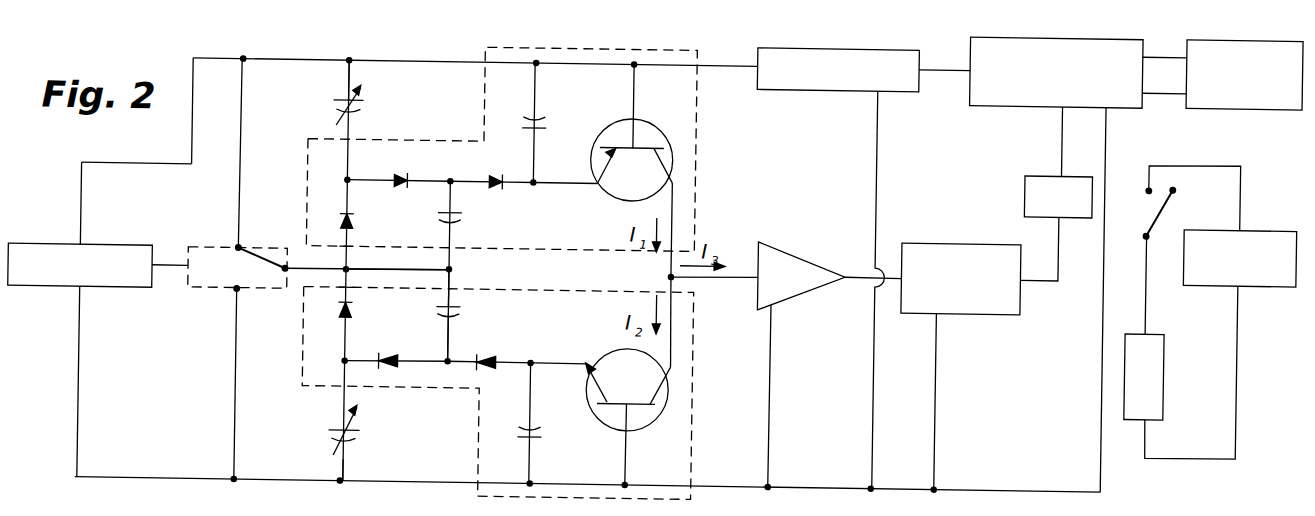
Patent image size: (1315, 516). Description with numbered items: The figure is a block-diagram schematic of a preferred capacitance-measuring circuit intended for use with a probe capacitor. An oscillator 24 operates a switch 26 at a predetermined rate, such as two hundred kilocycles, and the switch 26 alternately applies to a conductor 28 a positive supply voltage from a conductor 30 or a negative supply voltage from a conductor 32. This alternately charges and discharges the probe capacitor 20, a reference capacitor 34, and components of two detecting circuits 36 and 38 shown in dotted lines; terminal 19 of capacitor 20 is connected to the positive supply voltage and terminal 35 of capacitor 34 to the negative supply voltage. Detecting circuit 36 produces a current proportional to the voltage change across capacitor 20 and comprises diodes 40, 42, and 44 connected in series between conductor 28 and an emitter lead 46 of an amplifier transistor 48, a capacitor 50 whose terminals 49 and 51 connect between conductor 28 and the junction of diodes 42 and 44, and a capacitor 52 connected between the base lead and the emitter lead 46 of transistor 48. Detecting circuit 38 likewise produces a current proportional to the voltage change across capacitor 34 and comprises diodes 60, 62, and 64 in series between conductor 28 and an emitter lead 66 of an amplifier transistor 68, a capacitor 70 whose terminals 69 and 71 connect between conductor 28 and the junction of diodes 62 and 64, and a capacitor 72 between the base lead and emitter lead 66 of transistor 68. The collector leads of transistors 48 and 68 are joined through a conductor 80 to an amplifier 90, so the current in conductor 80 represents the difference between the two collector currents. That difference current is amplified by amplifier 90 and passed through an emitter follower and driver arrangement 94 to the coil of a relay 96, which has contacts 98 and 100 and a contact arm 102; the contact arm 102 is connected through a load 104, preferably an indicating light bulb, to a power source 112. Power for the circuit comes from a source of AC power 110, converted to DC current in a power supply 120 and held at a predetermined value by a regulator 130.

The terminal 19 is at (357, 79).
The probe capacitor 20 is at (361, 103).
The oscillator 24 is at (43, 249).
The switch 26 is at (199, 250).
The conductor 28 is at (402, 275).
The conductor 30 is at (291, 61).
The conductor 32 is at (278, 482).
The reference capacitor 34 is at (330, 432).
The terminal 35 is at (347, 469).
The detecting circuit 36 is at (305, 184).
The detecting circuit 38 is at (301, 337).
The diode 40 is at (350, 222).
The diode 42 is at (403, 176).
The diode 44 is at (504, 186).
The emitter lead 46 is at (590, 176).
The amplifier transistor 48 is at (611, 170).
The terminal 49 is at (452, 263).
The capacitor 50 is at (465, 218).
The terminal 51 is at (458, 178).
The capacitor 52 is at (548, 117).
The diode 60 is at (350, 310).
The diode 62 is at (392, 357).
The diode 64 is at (495, 357).
The emitter lead 66 is at (590, 362).
The amplifier transistor 68 is at (623, 379).
The terminal 69 is at (448, 284).
The capacitor 70 is at (463, 306).
The terminal 71 is at (460, 317).
The capacitor 72 is at (536, 426).
The conductor 80 is at (741, 275).
The amplifier 90 is at (800, 254).
The emitter follower and driver arrangement 94 is at (961, 235).
The relay 96 is at (1023, 186).
The contact 98 is at (1180, 199).
The contact 100 is at (1181, 178).
The contact arm 102 is at (1159, 203).
The load 104 is at (1166, 338).
The source of AC power 110 is at (1267, 98).
The power source 112 is at (1266, 276).
The power supply 120 is at (1032, 98).
The regulator 130 is at (867, 41).